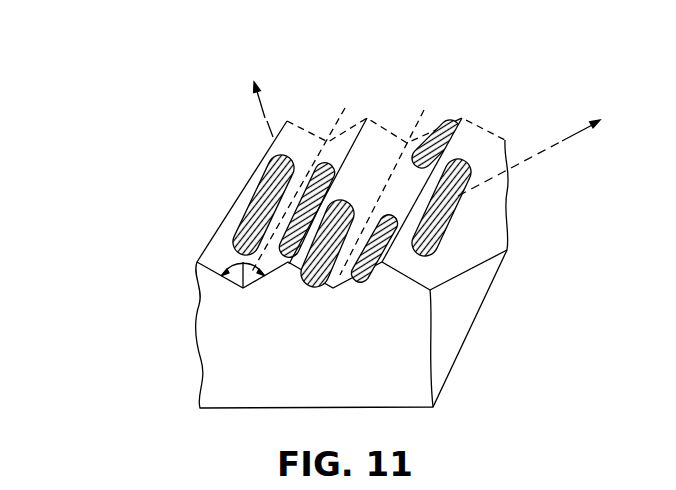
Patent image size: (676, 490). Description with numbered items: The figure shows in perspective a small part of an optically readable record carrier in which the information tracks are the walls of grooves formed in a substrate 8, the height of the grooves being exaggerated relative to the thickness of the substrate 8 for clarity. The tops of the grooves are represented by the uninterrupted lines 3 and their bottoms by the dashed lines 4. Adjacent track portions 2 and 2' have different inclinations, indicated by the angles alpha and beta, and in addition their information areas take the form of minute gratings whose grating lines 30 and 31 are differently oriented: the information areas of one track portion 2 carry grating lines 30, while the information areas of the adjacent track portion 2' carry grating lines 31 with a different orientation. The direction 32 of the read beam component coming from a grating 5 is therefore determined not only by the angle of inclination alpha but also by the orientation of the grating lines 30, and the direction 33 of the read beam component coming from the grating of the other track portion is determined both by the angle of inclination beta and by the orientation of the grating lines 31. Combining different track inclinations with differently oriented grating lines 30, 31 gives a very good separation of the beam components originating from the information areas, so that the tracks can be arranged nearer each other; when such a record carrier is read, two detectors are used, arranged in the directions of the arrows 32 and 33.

The information track 2 is at (396, 118).
The information track 2' is at (338, 111).
The groove top 3 is at (282, 121).
The groove bottom 4 is at (344, 184).
The grating 5 is at (223, 247).
The substrate 8 is at (411, 389).
The grating lines 30 is at (248, 184).
The grating lines 31 is at (285, 257).
The direction of read beam component 32 is at (533, 158).
The direction of read beam component 33 is at (256, 103).